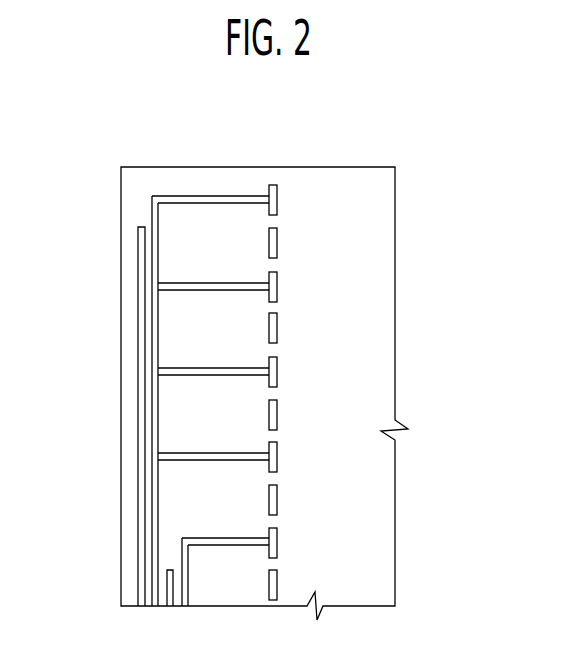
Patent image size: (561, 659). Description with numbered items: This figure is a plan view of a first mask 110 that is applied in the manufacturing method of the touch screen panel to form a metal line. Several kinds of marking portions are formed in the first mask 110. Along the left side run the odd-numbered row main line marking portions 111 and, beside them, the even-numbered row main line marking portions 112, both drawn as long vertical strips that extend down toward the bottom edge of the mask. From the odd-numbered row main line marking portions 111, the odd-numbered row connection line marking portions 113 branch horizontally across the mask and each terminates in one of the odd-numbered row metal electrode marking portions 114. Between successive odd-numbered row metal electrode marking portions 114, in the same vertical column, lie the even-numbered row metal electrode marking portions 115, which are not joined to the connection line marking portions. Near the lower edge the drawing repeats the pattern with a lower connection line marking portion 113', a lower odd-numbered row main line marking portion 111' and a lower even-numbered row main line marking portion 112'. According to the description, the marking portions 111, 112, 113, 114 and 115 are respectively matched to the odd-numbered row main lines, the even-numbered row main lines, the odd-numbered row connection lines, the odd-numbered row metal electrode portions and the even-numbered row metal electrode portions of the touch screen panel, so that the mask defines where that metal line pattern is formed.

The first mask 110 is at (350, 167).
The odd-numbered row main line marking portions 111 is at (120, 372).
The even-numbered row main line marking portions 112 is at (97, 416).
The odd-numbered row connection line marking portions 113 is at (210, 282).
The odd-numbered row metal electrode marking portions 114 is at (274, 186).
The even-numbered row metal electrode marking portions 115 is at (277, 246).
The lower branch electrode 113' is at (156, 536).
The lower first electrode line 111' is at (117, 572).
The lower second electrode line 112' is at (110, 591).